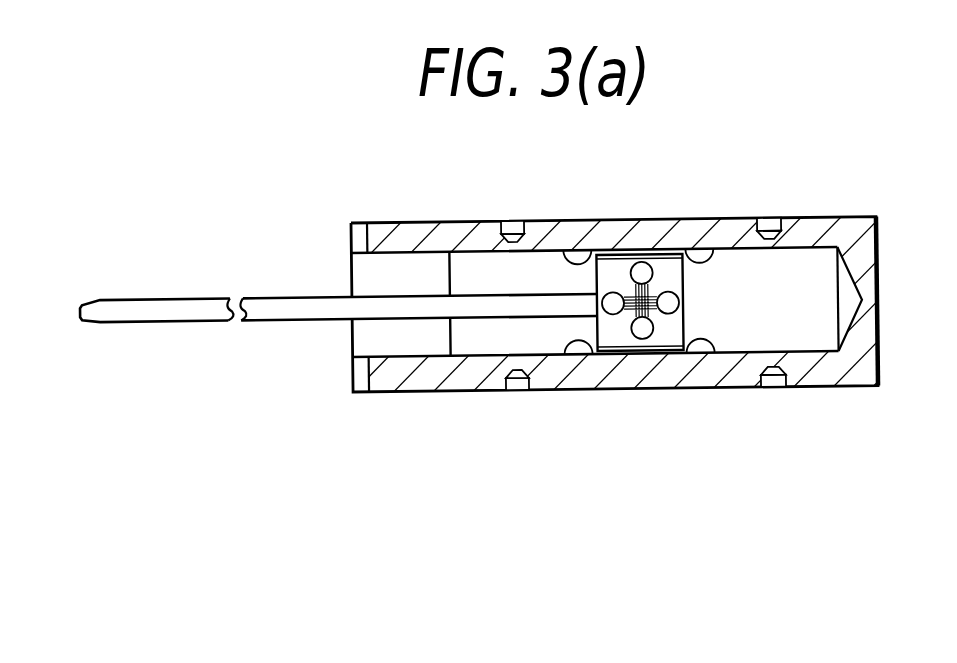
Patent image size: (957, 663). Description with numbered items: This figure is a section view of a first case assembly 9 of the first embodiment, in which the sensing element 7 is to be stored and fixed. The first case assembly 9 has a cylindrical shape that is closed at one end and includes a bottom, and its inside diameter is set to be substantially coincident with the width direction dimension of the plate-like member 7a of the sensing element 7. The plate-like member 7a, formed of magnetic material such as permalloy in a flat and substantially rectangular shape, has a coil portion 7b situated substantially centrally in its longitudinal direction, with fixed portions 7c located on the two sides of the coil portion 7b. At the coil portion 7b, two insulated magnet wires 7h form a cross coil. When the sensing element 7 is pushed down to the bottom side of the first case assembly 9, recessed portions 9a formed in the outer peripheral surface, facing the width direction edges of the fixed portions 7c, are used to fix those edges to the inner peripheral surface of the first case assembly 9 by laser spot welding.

The sensing element 7 is at (852, 305).
The plate-like member 7a is at (446, 335).
The coil portion 7b is at (673, 335).
The fixed portions 7c is at (481, 265).
The magnet wires 7h is at (283, 303).
The first case assembly 9 is at (596, 198).
The recessed portions 9a is at (517, 222).